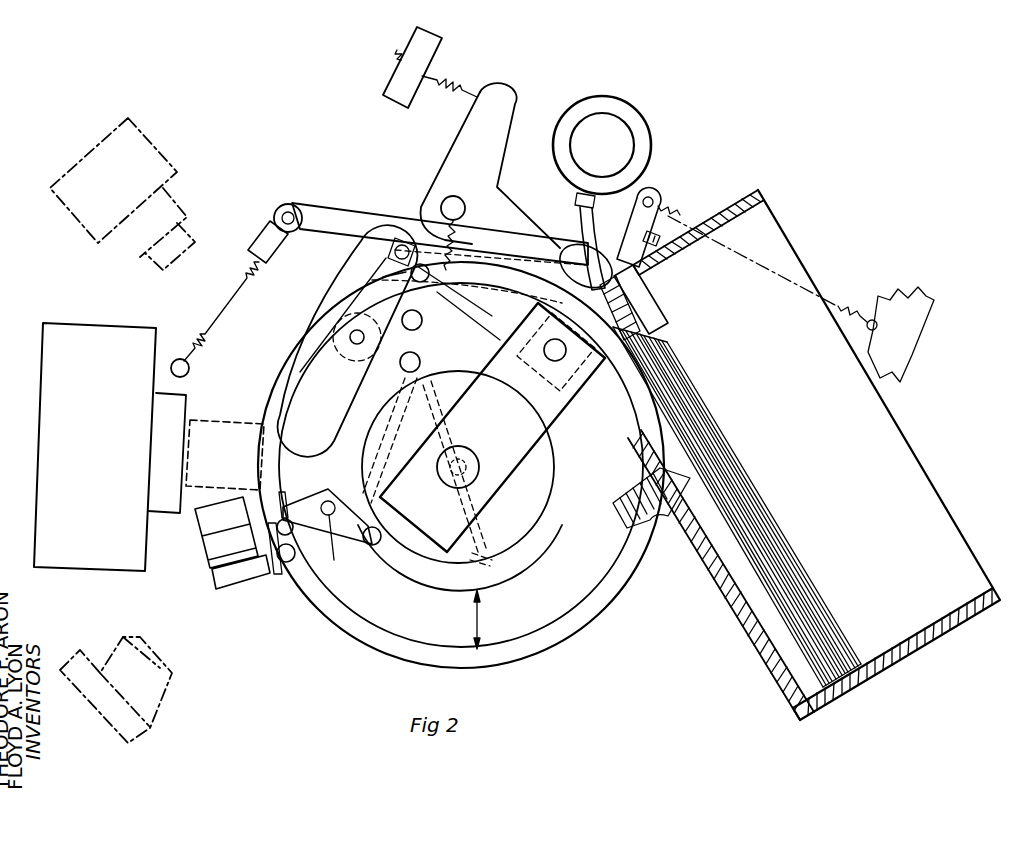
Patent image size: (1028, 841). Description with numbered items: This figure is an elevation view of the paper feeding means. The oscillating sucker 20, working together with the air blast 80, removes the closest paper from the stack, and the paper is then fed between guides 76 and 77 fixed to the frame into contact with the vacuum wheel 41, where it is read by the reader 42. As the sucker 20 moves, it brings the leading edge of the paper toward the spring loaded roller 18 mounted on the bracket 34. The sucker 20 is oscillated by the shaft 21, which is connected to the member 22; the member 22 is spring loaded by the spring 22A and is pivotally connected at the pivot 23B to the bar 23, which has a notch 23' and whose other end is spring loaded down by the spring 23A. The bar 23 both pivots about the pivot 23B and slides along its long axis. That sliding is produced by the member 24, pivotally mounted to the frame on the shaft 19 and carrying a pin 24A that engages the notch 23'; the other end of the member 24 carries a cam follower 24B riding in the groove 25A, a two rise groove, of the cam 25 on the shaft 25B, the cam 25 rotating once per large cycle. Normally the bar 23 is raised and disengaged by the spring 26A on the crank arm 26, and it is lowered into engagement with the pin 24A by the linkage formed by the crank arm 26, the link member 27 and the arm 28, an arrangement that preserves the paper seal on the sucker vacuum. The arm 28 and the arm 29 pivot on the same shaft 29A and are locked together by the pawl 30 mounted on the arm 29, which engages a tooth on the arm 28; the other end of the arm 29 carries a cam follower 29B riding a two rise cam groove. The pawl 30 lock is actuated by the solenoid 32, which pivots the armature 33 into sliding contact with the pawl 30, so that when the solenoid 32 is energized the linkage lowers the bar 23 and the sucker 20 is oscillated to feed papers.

The spring loaded roller 18 is at (570, 244).
The shaft 19 is at (350, 337).
The oscillating sucker 20 is at (655, 305).
The shaft 21 is at (552, 362).
The member 22 is at (593, 248).
The spring 22A is at (679, 212).
The bar 23 is at (431, 249).
The notch 23' is at (375, 252).
The spring 23A is at (230, 306).
The pivot 23B is at (625, 308).
The member 24 is at (383, 277).
The pin 24A is at (353, 315).
The cam follower 24B is at (290, 362).
The cam 25 is at (260, 403).
The groove 25A is at (479, 620).
The shaft 25B is at (468, 452).
The crank arm 26 is at (409, 308).
The spring 26A is at (446, 240).
The link member 27 is at (398, 360).
The arm 28 is at (363, 540).
The arm 29 is at (298, 540).
The shaft 29A is at (336, 566).
The cam follower 29B is at (398, 540).
The pawl 30 is at (290, 508).
The solenoid 32 is at (262, 594).
The armature 33 is at (270, 533).
The bracket 34 is at (497, 178).
The vacuum wheel 41 is at (535, 518).
The reader 42 is at (218, 458).
The guide 76 is at (455, 370).
The guide 77 is at (421, 355).
The air blast 80 is at (636, 118).